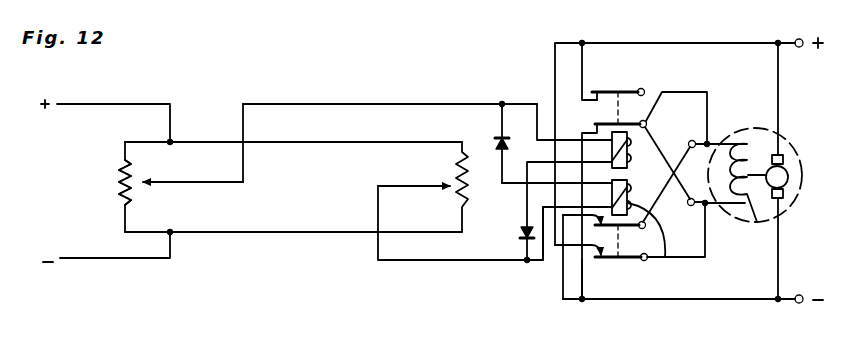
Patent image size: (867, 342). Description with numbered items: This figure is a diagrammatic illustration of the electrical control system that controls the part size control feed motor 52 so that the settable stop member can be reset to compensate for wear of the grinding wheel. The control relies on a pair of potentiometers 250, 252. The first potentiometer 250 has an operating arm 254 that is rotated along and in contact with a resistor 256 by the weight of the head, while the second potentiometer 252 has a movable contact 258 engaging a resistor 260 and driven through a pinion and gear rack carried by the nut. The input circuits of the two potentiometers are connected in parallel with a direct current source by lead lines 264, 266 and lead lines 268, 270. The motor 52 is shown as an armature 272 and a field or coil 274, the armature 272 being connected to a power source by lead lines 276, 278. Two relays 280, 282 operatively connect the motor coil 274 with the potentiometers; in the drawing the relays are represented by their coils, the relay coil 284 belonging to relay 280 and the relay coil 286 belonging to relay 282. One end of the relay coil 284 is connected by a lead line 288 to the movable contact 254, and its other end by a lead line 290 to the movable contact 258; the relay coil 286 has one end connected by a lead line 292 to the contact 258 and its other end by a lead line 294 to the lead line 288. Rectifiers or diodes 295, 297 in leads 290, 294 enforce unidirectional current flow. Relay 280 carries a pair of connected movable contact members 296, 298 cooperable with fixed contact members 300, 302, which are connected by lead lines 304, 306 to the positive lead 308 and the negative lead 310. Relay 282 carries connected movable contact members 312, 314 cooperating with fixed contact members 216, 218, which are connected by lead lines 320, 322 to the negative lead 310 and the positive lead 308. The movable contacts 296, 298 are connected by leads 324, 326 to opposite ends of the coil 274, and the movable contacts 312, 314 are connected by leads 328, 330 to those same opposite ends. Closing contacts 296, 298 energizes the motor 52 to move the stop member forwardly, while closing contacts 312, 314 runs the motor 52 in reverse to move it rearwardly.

The motor 52 is at (794, 141).
The fixed contact member 216 is at (604, 231).
The fixed contact member 218 is at (598, 260).
The potentiometer 250 is at (116, 177).
The potentiometer 252 is at (478, 132).
The operating arm 254 is at (136, 184).
The resistor 256 is at (122, 198).
The movable contact 258 is at (449, 184).
The resistor 260 is at (460, 204).
The lead line 264 is at (120, 104).
The lead line 266 is at (128, 259).
The lead line 268 is at (282, 141).
The lead line 270 is at (322, 234).
The armature 272 is at (790, 195).
The field or coil 274 is at (753, 224).
The lead line 276 is at (780, 96).
The lead line 278 is at (780, 268).
The relay 280 is at (675, 173).
The relay 282 is at (619, 227).
The relay coil 284 is at (647, 128).
The relay coil 286 is at (654, 239).
The lead line 288 is at (357, 104).
The lead line 290 is at (524, 208).
The lead line 292 is at (540, 260).
The lead line 294 is at (524, 183).
The rectifier or diode 295 is at (519, 236).
The movable contact member 296 is at (629, 90).
The rectifier or diode 297 is at (505, 141).
The movable contact member 298 is at (647, 91).
The fixed contact member 300 is at (601, 97).
The fixed contact member 302 is at (596, 130).
The lead line 304 is at (580, 70).
The lead line 306 is at (582, 286).
The positive lead 308 is at (624, 43).
The negative lead 310 is at (688, 300).
The movable contact member 312 is at (632, 263).
The movable contact member 314 is at (662, 258).
The lead line 320 is at (563, 291).
The lead line 322 is at (554, 86).
The lead 324 is at (708, 100).
The lead 326 is at (661, 153).
The lead 328 is at (704, 259).
The lead 330 is at (658, 205).